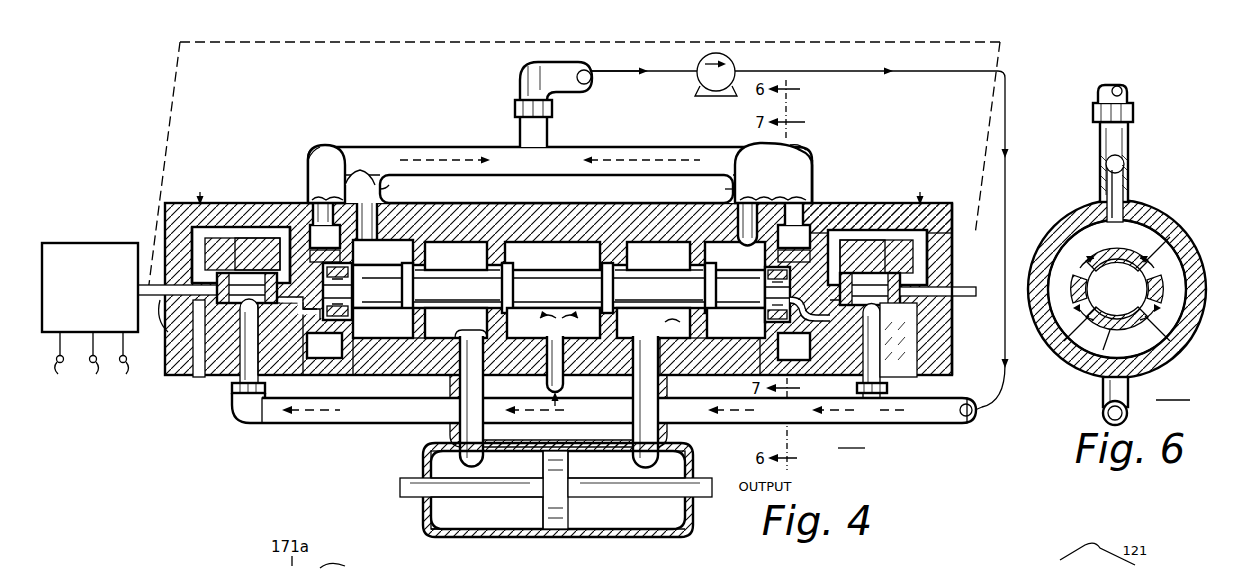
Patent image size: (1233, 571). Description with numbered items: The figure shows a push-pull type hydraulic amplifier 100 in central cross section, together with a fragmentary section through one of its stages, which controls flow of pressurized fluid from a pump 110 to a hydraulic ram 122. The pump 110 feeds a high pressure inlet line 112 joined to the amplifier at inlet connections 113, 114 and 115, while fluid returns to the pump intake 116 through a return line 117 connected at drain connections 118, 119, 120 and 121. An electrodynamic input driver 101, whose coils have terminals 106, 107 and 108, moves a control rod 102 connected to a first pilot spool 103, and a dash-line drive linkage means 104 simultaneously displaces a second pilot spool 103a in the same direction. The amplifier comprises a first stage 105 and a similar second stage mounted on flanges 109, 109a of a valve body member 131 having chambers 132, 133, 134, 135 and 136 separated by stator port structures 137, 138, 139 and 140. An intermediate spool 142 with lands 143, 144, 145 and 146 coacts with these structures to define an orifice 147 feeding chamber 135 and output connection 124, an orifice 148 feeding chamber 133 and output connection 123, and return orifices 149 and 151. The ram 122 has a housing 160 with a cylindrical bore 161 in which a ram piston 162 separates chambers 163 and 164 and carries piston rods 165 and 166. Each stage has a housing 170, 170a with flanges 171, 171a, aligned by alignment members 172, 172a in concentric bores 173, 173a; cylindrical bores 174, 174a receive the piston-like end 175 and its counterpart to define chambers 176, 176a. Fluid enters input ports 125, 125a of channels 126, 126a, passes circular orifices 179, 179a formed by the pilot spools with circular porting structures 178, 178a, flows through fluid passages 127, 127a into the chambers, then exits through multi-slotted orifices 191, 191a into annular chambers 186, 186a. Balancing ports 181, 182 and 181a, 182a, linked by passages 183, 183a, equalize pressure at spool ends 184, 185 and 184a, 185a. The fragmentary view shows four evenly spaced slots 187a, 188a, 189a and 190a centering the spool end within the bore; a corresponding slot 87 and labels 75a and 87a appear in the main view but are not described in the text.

In FIG. 4, the hydraulic amplifier 100 is at (851, 439).
In FIG. 4, the electrodynamic input driver 101 is at (78, 243).
In FIG. 4, the control rod 102 is at (149, 325).
In FIG. 4, the first pilot spool 103 is at (247, 288).
In FIG. 4, the drive linkage means 104 is at (180, 72).
In FIG. 4, the first stage 105 is at (203, 189).
In FIG. 4, the terminal 106 is at (57, 364).
In FIG. 4, the terminal 107 is at (101, 364).
In FIG. 4, the terminal 108 is at (135, 364).
In FIG. 4, the flange 109 is at (352, 182).
In FIG. 4, the pump 110 is at (735, 60).
In FIG. 4, the high pressure inlet line 112 is at (906, 426).
In FIG. 6, the high pressure inlet line 112 is at (1130, 405).
In FIG. 4, the inlet connection 113 is at (887, 389).
In FIG. 4, the inlet connection 114 is at (563, 388).
In FIG. 4, the inlet connection 115 is at (265, 389).
In FIG. 4, the intake 116 is at (698, 86).
In FIG. 4, the return line 117 is at (584, 147).
In FIG. 6, the return line 117 is at (1130, 140).
In FIG. 4, the drain connection 118 is at (345, 180).
In FIG. 4, the drain connection 119 is at (395, 190).
In FIG. 4, the drain connection 120 is at (716, 190).
In FIG. 4, the drain connection 121 is at (812, 172).
In FIG. 6, the drain connection 121 is at (1128, 176).
In FIG. 4, the hydraulic ram 122 is at (598, 537).
In FIG. 4, the output connection 123 is at (450, 436).
In FIG. 4, the output connection 124 is at (667, 437).
In FIG. 4, the input port 125 is at (230, 341).
In FIG. 4, the channel 126 is at (242, 254).
In FIG. 4, the fluid passage 127 is at (278, 339).
In FIG. 4, the valve body member 131 is at (497, 200).
In FIG. 4, the chamber 132 is at (368, 262).
In FIG. 4, the chamber 133 is at (441, 262).
In FIG. 4, the chamber 134 is at (538, 262).
In FIG. 4, the chamber 135 is at (648, 262).
In FIG. 4, the chamber 136 is at (722, 262).
In FIG. 4, the stator port structure 137 is at (456, 323).
In FIG. 4, the stator port structure 138 is at (553, 323).
In FIG. 4, the stator port structure 139 is at (660, 332).
In FIG. 4, the stator port structure 140 is at (712, 325).
In FIG. 4, the intermediate spool 142 is at (565, 294).
In FIG. 4, the land 143 is at (457, 283).
In FIG. 4, the land 144 is at (500, 289).
In FIG. 4, the land 145 is at (616, 289).
In FIG. 4, the land 146 is at (659, 289).
In FIG. 4, the orifice 147 is at (570, 322).
In FIG. 4, the orifice 148 is at (490, 318).
In FIG. 4, the orifice 149 is at (410, 325).
In FIG. 4, the orifice 151 is at (677, 326).
In FIG. 4, the housing 160 is at (520, 540).
In FIG. 4, the cylindrical bore 161 is at (488, 528).
In FIG. 4, the ram piston 162 is at (555, 490).
In FIG. 4, the chamber 163 is at (468, 463).
In FIG. 4, the chamber 164 is at (600, 466).
In FIG. 4, the piston rod 165 is at (500, 490).
In FIG. 4, the piston rod 166 is at (625, 490).
In FIG. 4, the housing 170 is at (262, 205).
In FIG. 6, the housing 170 is at (1130, 215).
In FIG. 4, the housing 170a is at (855, 207).
In FIG. 6, the housing 170a is at (1038, 252).
In FIG. 4, the flange 171 is at (318, 156).
In FIG. 4, the flange 171a is at (806, 155).
In FIG. 4, the alignment member 172 is at (325, 219).
In FIG. 4, the alignment member 172a is at (792, 219).
In FIG. 4, the concentric bore 173 is at (378, 222).
In FIG. 4, the concentric bore 173a is at (738, 225).
In FIG. 4, the cylindrical bore 174 is at (321, 257).
In FIG. 4, the cylindrical bore 174a is at (800, 257).
In FIG. 4, the piston-like end 175 is at (356, 291).
In FIG. 4, the chamber 176 is at (309, 319).
In FIG. 4, the chamber 176a is at (807, 314).
In FIG. 4, the circular porting structure 178 is at (240, 268).
In FIG. 4, the circular porting structure 178a is at (856, 255).
In FIG. 4, the circular orifice 179 is at (211, 338).
In FIG. 4, the circular orifice 179a is at (902, 340).
In FIG. 4, the balancing port 181 is at (190, 250).
In FIG. 4, the balancing port 181a is at (952, 245).
In FIG. 4, the balancing port 182 is at (242, 245).
In FIG. 4, the balancing port 182a is at (833, 230).
In FIG. 4, the passage 183 is at (200, 228).
In FIG. 4, the passage 183a is at (880, 232).
In FIG. 4, the end of pilot spool 184 is at (178, 303).
In FIG. 4, the end of pilot spool 184a is at (958, 287).
In FIG. 4, the end of pilot spool 185 is at (293, 313).
In FIG. 4, the end of pilot spool 185a is at (834, 321).
In FIG. 4, the annular chamber 186 is at (324, 345).
In FIG. 4, the annular chamber 186a is at (792, 346).
In FIG. 6, the annular chamber 186a is at (1103, 350).
In FIG. 6, the slot 187a is at (1170, 237).
In FIG. 6, the slot 188a is at (1170, 341).
In FIG. 6, the slot 189a is at (1064, 341).
In FIG. 6, the slot 190a is at (1080, 262).
In FIG. 4, the multi-slotted orifice 191 is at (413, 356).
In FIG. 4, the multi-slotted orifice 191a is at (770, 352).
In FIG. 6, the multi-slotted orifice 191a is at (1117, 289).
In FIG. 4, the second pilot spool 103a is at (870, 289).
In FIG. 4, the inlet port 125a is at (893, 345).
In FIG. 4, the channel 126a is at (876, 256).
In FIG. 4, the fluid passage 127a is at (779, 294).
In FIG. 4, the bearing race 87 is at (360, 288).
In FIG. 4, the bearing 75a is at (776, 300).
In FIG. 4, the bearing race 87a is at (770, 276).
In FIG. 4, the flange 109a is at (780, 183).